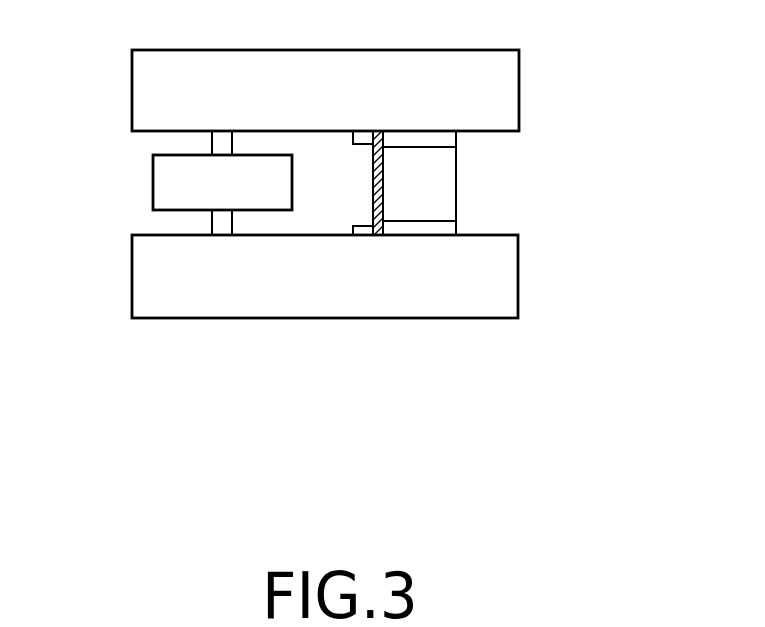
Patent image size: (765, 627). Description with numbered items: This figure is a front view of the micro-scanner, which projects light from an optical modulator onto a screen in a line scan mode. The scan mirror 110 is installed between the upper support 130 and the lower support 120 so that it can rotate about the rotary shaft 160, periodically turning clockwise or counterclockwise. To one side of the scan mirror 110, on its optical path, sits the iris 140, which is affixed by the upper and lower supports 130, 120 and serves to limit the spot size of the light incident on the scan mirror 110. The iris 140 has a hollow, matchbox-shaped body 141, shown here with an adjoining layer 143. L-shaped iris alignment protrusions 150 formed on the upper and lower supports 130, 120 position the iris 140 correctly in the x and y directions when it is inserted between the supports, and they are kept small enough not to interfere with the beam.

The scan mirror 110 is at (153, 178).
The lower support 120 is at (518, 280).
The upper support 130 is at (519, 92).
The iris 140 is at (466, 291).
The body 141 is at (436, 202).
The conductive layer 143 is at (382, 228).
The iris alignment protrusion 150 is at (360, 233).
The rotary shaft 160 is at (222, 218).